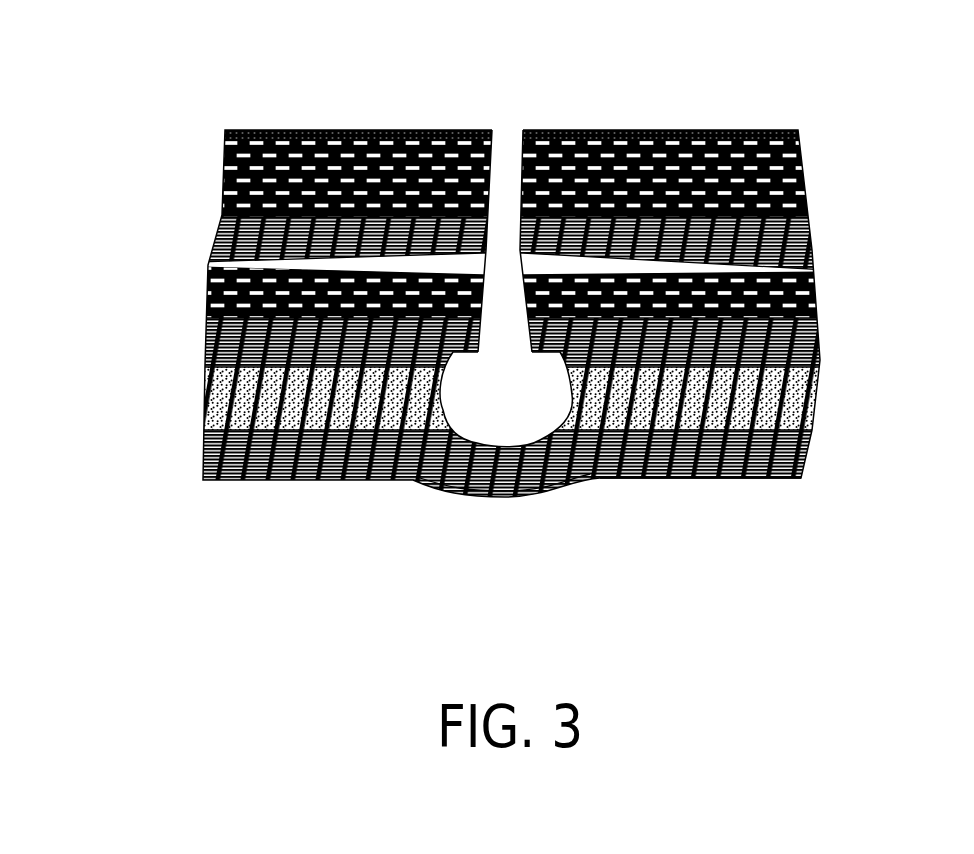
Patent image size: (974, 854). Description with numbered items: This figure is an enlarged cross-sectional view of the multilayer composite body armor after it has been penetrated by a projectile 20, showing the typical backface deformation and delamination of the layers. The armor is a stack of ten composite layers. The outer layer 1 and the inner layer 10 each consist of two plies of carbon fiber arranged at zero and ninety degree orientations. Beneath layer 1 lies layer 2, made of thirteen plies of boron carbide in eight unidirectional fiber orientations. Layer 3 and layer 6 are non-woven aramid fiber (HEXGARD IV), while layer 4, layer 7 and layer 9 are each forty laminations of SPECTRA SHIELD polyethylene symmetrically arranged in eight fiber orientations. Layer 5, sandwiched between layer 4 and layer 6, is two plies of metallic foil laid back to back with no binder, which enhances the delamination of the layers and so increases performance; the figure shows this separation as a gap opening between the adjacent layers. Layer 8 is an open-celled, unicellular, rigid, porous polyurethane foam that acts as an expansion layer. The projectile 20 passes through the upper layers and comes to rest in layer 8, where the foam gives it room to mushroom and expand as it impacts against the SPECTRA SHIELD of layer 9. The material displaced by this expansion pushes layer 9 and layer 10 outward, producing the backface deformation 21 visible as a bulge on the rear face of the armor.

The layer 1 is at (593, 128).
The layer 2 is at (340, 150).
The layer 3 is at (783, 178).
The layer 4 is at (222, 228).
The layer 5 is at (783, 262).
The layer 6 is at (207, 293).
The layer 7 is at (815, 327).
The layer 8 is at (207, 420).
The layer 9 is at (787, 450).
The layer 10 is at (655, 480).
The projectile 20 is at (475, 405).
The backface deformation 21 is at (487, 506).